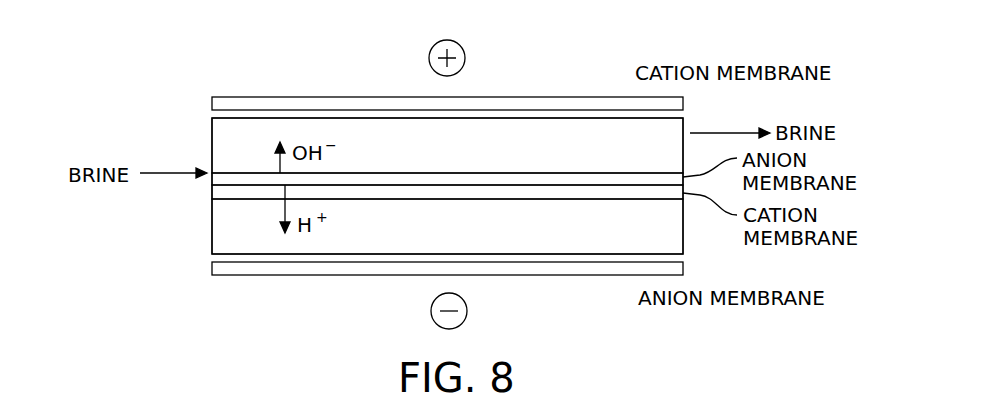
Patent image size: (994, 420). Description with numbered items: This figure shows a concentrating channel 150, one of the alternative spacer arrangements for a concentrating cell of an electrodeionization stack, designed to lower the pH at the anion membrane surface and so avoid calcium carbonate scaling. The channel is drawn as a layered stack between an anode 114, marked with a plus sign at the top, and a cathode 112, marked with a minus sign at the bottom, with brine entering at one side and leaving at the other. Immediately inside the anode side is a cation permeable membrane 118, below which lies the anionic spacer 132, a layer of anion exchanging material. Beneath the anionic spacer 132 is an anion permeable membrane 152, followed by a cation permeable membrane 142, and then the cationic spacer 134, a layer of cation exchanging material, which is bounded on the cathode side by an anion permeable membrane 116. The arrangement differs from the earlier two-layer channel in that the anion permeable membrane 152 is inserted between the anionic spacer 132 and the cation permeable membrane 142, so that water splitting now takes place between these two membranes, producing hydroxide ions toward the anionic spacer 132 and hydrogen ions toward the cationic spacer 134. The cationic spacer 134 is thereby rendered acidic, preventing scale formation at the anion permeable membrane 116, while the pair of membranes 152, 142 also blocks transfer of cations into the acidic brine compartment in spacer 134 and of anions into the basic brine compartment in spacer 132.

The concentrating channel 150 is at (281, 73).
The anion permeable membrane 152 is at (230, 180).
The cation permeable membrane 142 is at (218, 193).
The anionic spacer 132 is at (668, 133).
The cationic spacer 134 is at (668, 239).
The anode 114 is at (465, 53).
The cathode 112 is at (467, 311).
The cation permeable membrane 118 is at (569, 97).
The anion permeable membrane 116 is at (575, 277).